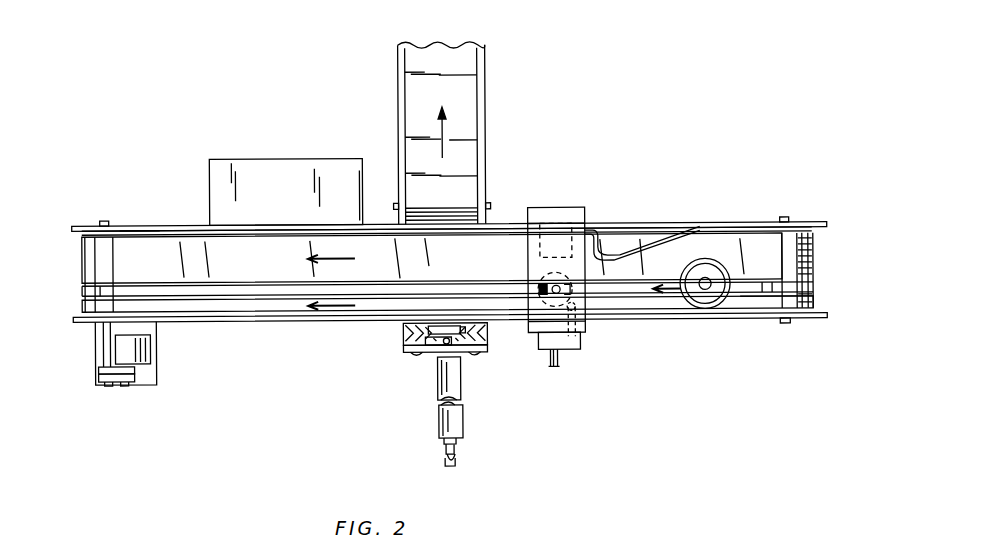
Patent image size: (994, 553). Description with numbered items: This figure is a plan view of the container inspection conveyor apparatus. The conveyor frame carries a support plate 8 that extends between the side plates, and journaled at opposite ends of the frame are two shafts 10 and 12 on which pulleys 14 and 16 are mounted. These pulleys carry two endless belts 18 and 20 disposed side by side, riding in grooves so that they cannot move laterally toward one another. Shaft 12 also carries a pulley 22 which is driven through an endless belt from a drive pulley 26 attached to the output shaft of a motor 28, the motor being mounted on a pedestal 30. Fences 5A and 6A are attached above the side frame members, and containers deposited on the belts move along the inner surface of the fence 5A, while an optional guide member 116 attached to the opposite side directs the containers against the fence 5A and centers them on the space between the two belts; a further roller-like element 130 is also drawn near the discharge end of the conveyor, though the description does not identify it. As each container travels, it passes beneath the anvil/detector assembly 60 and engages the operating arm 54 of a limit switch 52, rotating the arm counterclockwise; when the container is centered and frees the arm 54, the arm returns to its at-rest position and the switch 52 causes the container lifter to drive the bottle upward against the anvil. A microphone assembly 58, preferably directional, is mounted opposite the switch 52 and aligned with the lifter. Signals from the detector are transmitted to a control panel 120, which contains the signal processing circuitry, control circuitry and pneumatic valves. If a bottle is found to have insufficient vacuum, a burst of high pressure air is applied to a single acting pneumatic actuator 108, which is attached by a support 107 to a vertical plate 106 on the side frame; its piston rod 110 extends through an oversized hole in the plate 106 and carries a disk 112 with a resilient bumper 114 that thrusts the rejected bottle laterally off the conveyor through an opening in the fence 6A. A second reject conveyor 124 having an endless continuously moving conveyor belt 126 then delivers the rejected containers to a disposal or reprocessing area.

The shaft 12 is at (104, 220).
The second fence 6A is at (155, 224).
The pulley 16 is at (88, 292).
The endless belt 20 is at (250, 268).
The fence 5A is at (226, 320).
The endless belt 18 is at (296, 297).
The motor 28 is at (133, 350).
The pedestal 30 is at (156, 380).
The pulley 22 is at (100, 383).
The drive pulley 26 is at (128, 383).
The control panel 120 is at (207, 178).
The second reject conveyor 124 is at (489, 100).
The endless conveyor belt 126 is at (462, 125).
The microphone assembly 58 is at (578, 226).
The anvil/detector assembly 60 is at (540, 284).
The operating arm 54 is at (577, 336).
The limit switch 52 is at (560, 352).
The guide member 116 is at (645, 250).
The pressure roller 130 is at (710, 262).
The pulley 14 is at (806, 296).
The support plate 8 is at (754, 296).
The shaft 10 is at (786, 326).
The vertical plate 106 is at (404, 330).
The support 107 is at (416, 356).
The single acting pneumatic actuator 108 is at (444, 372).
The piston rod 110 is at (449, 342).
The disk 112 is at (456, 327).
The resilient bumper 114 is at (437, 337).